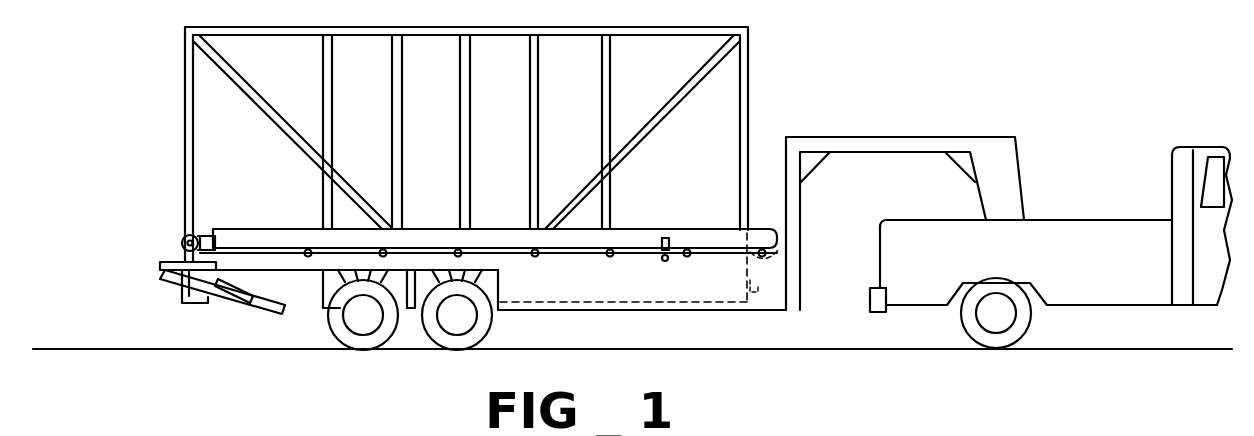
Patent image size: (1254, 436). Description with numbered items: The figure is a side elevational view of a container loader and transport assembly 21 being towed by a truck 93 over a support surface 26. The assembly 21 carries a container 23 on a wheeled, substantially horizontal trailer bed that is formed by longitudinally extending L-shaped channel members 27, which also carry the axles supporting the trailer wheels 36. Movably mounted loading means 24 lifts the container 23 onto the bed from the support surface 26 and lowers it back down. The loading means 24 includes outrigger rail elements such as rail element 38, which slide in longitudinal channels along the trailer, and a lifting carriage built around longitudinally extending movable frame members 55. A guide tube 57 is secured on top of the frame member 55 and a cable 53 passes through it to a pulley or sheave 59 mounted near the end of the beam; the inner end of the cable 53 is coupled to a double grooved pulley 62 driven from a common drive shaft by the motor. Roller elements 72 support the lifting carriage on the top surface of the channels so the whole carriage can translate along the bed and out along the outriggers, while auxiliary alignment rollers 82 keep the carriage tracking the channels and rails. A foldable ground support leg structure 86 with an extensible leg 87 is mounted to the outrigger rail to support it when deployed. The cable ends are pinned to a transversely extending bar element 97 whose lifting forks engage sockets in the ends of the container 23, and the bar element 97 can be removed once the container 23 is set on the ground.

The loader and transport assembly 21 is at (158, 101).
The container 23 is at (725, 86).
The loading means 24 is at (164, 219).
The support surface 26 is at (48, 348).
The L-shaped channel members 27 is at (400, 300).
The trailer wheels 36 is at (492, 322).
The rail element 38 is at (165, 262).
The cable 53 is at (205, 229).
The movable frame members 55 is at (283, 246).
The guide tube 57 is at (343, 229).
The pulley or sheave 59 is at (181, 240).
The double grooved pulley 62 is at (756, 232).
The roller elements 72 is at (515, 250).
The auxiliary alignment rollers 82 is at (668, 262).
The ground support leg structure 86 is at (218, 311).
The extensible leg 87 is at (270, 309).
The truck 93 is at (1094, 218).
The bar element 97 is at (178, 290).